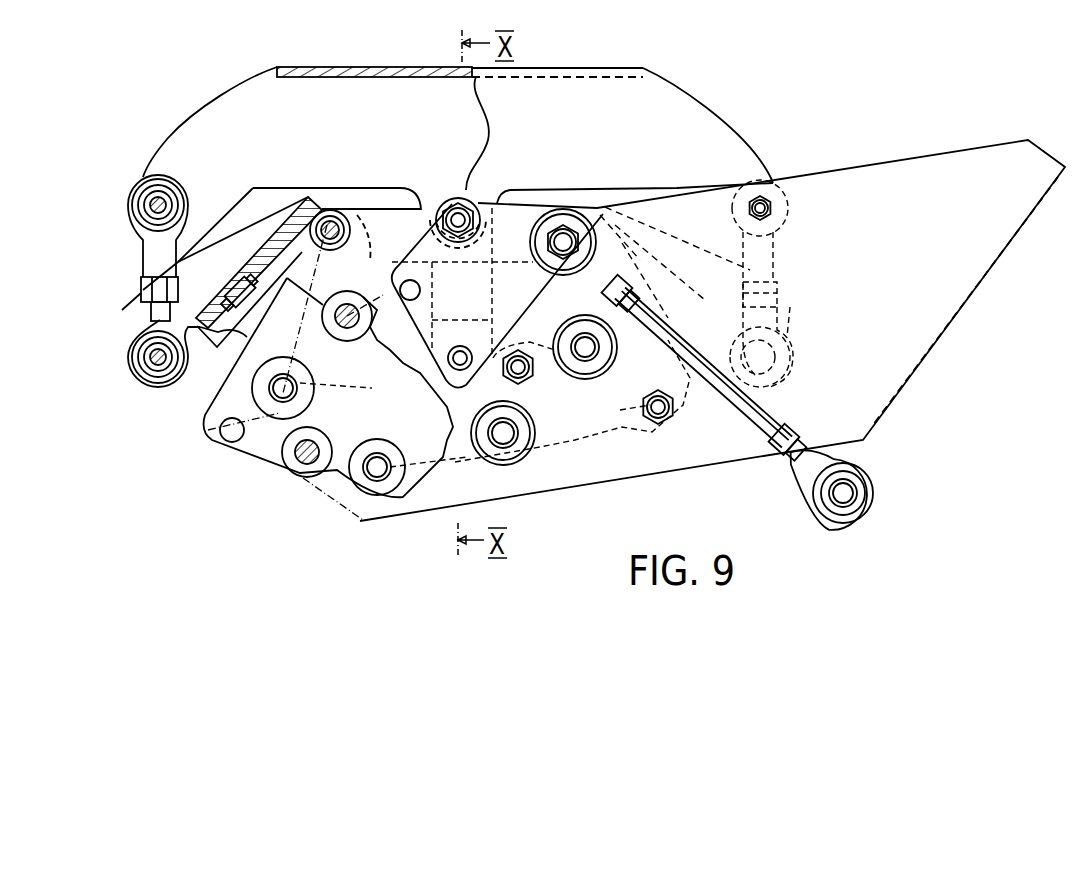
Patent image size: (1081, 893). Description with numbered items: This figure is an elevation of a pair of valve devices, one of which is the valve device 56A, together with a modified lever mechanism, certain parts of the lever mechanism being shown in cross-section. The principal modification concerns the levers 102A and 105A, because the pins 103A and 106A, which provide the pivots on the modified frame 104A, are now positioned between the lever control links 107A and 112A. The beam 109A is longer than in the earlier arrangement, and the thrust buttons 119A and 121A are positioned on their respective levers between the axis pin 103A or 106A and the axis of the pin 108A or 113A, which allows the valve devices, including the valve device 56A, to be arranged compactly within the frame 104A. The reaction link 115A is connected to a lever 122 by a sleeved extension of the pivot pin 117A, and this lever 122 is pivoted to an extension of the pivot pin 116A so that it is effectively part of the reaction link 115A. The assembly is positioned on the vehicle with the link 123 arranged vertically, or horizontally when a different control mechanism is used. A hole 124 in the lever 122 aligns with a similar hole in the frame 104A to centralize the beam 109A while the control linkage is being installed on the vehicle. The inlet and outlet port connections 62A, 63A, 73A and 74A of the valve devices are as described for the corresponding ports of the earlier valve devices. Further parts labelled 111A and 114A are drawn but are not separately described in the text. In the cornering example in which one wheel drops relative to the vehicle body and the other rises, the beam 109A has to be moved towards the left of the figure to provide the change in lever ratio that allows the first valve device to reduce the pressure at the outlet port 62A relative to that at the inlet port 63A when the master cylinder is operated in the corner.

The valve device 56A is at (527, 512).
The outlet port 62A is at (283, 390).
The inlet port 63A is at (377, 469).
The port connection 73A is at (505, 435).
The port connection 74A is at (586, 350).
The lever 102A is at (255, 228).
The pin 103A is at (332, 232).
The frame 104A is at (630, 485).
The lever 105A is at (663, 233).
The pin 106A is at (600, 233).
The lever control link 107A is at (150, 262).
The pin 108A is at (160, 362).
The beam 109A is at (585, 125).
The upper eye 111A is at (152, 210).
The lever control link 112A is at (775, 268).
The pin 113A is at (762, 356).
The upper nut of link 114A is at (772, 219).
The reaction link 115A is at (413, 207).
The pivot pin 116A is at (460, 360).
The pivot pin 117A is at (460, 222).
The thrust button 119A is at (237, 300).
The thrust button 121A is at (690, 320).
The lever 122 is at (518, 293).
The link 123 is at (775, 415).
The hole 124 is at (414, 294).